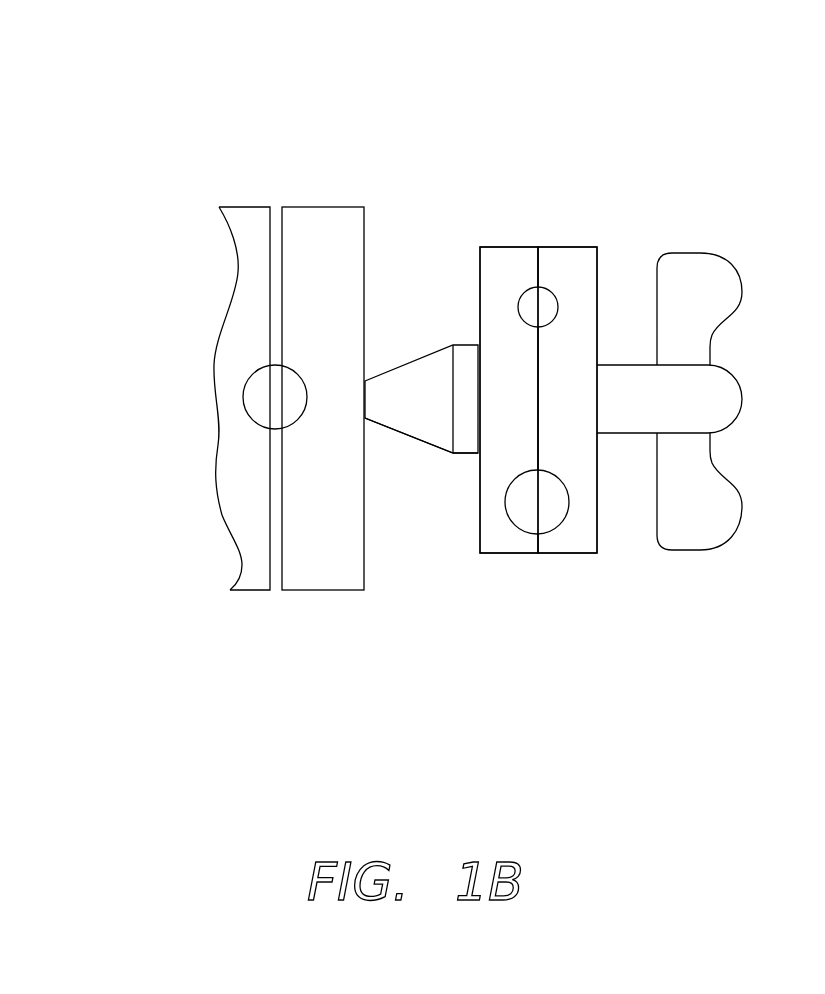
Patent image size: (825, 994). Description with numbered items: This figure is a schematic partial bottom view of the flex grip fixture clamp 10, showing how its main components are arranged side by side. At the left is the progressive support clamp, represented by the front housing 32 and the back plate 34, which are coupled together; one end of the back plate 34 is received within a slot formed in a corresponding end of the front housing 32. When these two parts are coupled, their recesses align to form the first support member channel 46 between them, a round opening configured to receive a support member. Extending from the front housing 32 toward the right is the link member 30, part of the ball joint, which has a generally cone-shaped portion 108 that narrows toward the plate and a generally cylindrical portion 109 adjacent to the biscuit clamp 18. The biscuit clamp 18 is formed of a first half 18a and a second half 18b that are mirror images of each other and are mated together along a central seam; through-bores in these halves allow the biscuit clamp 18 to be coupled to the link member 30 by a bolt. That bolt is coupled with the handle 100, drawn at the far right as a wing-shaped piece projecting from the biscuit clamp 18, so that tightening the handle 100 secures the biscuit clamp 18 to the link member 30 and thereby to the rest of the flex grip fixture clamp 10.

The flex grip fixture clamp 10 is at (487, 120).
The biscuit clamp 18 is at (568, 220).
The first half 18a is at (508, 553).
The second half 18b is at (579, 553).
The link member 30 is at (420, 348).
The front housing 32 is at (323, 592).
The back plate 34 is at (250, 592).
The first support member channel 46 is at (275, 398).
The handle 100 is at (744, 283).
The cone-shaped portion 108 is at (408, 437).
The cylindrical portion 109 is at (470, 457).